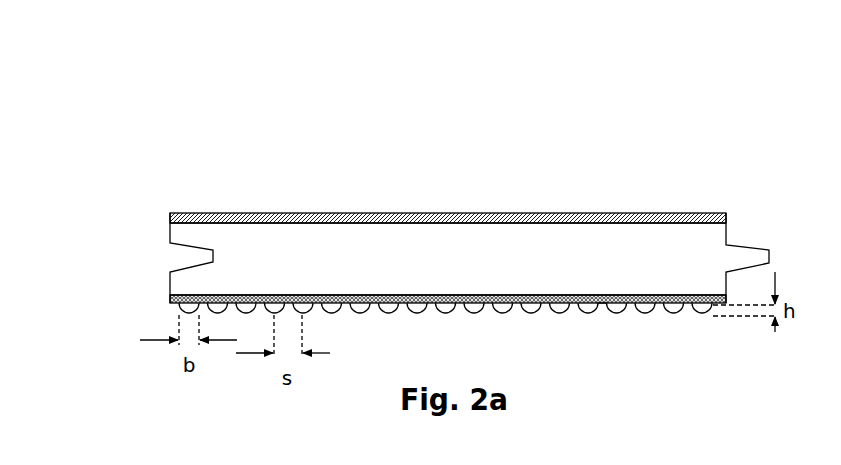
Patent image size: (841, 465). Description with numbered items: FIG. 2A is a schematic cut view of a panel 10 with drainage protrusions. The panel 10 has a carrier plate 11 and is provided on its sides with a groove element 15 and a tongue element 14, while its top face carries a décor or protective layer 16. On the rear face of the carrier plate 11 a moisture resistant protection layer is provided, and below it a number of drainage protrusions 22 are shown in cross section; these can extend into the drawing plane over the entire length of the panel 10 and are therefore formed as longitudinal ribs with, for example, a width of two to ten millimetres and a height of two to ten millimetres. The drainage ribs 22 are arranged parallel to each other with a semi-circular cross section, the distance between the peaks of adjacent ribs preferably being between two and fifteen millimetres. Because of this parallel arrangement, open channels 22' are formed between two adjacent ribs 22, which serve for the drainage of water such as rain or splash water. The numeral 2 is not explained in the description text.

The panel 10 is at (232, 172).
The carrier plate 11 is at (603, 245).
The décor or protective layer 16 is at (486, 213).
The groove element 15 is at (180, 255).
The tongue element 14 is at (752, 250).
The underlay layer 2 is at (170, 298).
The drainage protrusion 22 is at (456, 361).
The open channel 22' is at (626, 361).